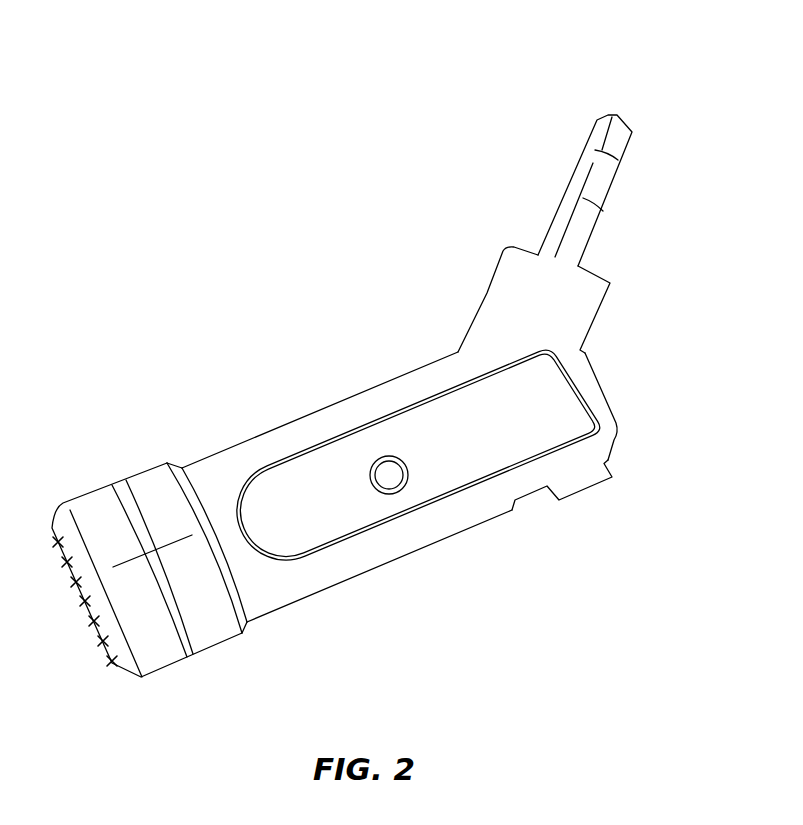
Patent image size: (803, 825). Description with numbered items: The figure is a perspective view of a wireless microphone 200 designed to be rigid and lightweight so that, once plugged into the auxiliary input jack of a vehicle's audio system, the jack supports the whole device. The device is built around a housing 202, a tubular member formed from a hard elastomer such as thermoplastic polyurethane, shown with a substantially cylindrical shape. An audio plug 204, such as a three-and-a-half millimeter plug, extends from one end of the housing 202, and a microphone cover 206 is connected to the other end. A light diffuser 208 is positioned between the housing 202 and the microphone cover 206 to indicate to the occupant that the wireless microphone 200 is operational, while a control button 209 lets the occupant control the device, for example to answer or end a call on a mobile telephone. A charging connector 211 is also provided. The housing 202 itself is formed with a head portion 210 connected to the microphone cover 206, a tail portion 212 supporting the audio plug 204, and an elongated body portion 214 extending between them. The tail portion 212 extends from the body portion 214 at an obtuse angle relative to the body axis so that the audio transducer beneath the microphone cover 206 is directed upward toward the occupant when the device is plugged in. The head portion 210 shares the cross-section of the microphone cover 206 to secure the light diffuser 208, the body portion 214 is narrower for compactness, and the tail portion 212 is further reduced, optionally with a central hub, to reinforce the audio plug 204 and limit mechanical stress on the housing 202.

The wireless microphone 200 is at (265, 166).
The housing 202 is at (145, 389).
The audio plug 204 is at (613, 188).
The microphone cover 206 is at (160, 673).
The light diffuser 208 is at (114, 485).
The control button 209 is at (388, 473).
The head portion 210 is at (147, 464).
The charging connector 211 is at (583, 488).
The tail portion 212 is at (487, 292).
The elongated body portion 214 is at (343, 400).